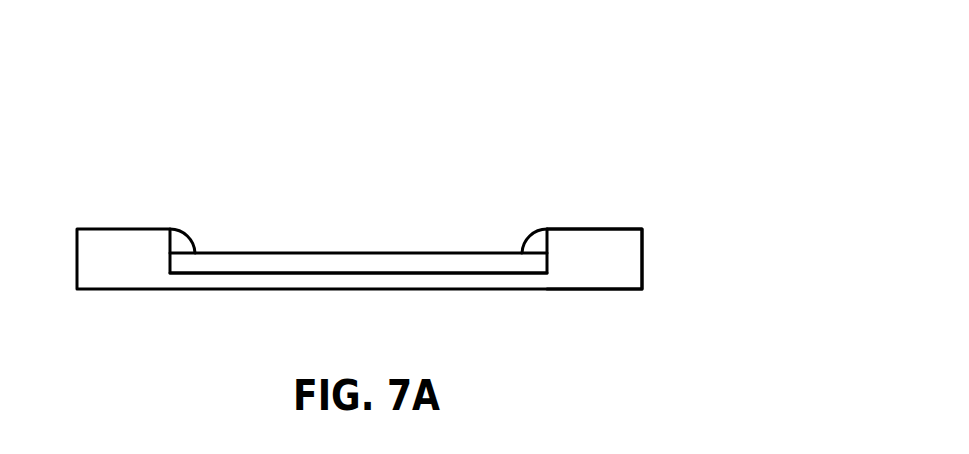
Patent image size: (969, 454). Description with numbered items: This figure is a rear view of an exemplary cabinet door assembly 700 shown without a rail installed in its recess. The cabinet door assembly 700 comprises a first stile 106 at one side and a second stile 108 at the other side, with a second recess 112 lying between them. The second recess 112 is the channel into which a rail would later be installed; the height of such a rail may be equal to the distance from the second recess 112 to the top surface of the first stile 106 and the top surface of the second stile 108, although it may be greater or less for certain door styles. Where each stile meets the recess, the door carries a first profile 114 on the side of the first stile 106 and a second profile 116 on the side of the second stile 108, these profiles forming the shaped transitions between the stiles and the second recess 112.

The cabinet door assembly 700 is at (772, 63).
The first stile 106 is at (117, 229).
The second stile 108 is at (595, 229).
The second recess 112 is at (453, 272).
The first profile 114 is at (189, 244).
The second profile 116 is at (535, 238).